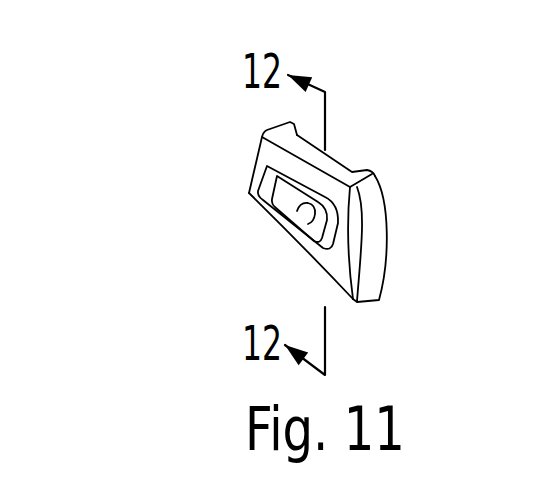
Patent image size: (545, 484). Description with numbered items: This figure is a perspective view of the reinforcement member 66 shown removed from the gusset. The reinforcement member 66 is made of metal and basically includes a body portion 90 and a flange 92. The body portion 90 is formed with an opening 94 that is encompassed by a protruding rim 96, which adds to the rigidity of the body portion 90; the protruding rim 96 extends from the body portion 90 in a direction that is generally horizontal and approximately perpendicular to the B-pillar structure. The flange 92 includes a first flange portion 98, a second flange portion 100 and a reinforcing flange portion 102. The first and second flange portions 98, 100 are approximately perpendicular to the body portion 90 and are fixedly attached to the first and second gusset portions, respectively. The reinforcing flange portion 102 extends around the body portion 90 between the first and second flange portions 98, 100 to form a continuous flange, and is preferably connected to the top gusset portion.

The reinforcement member 66 is at (447, 164).
The body portion 90 is at (339, 261).
The flange 92 is at (412, 274).
The opening 94 is at (313, 203).
The protruding rim 96 is at (276, 194).
The first flange portion 98 is at (259, 154).
The second flange portion 100 is at (378, 236).
The reinforcing flange portion 102 is at (338, 165).